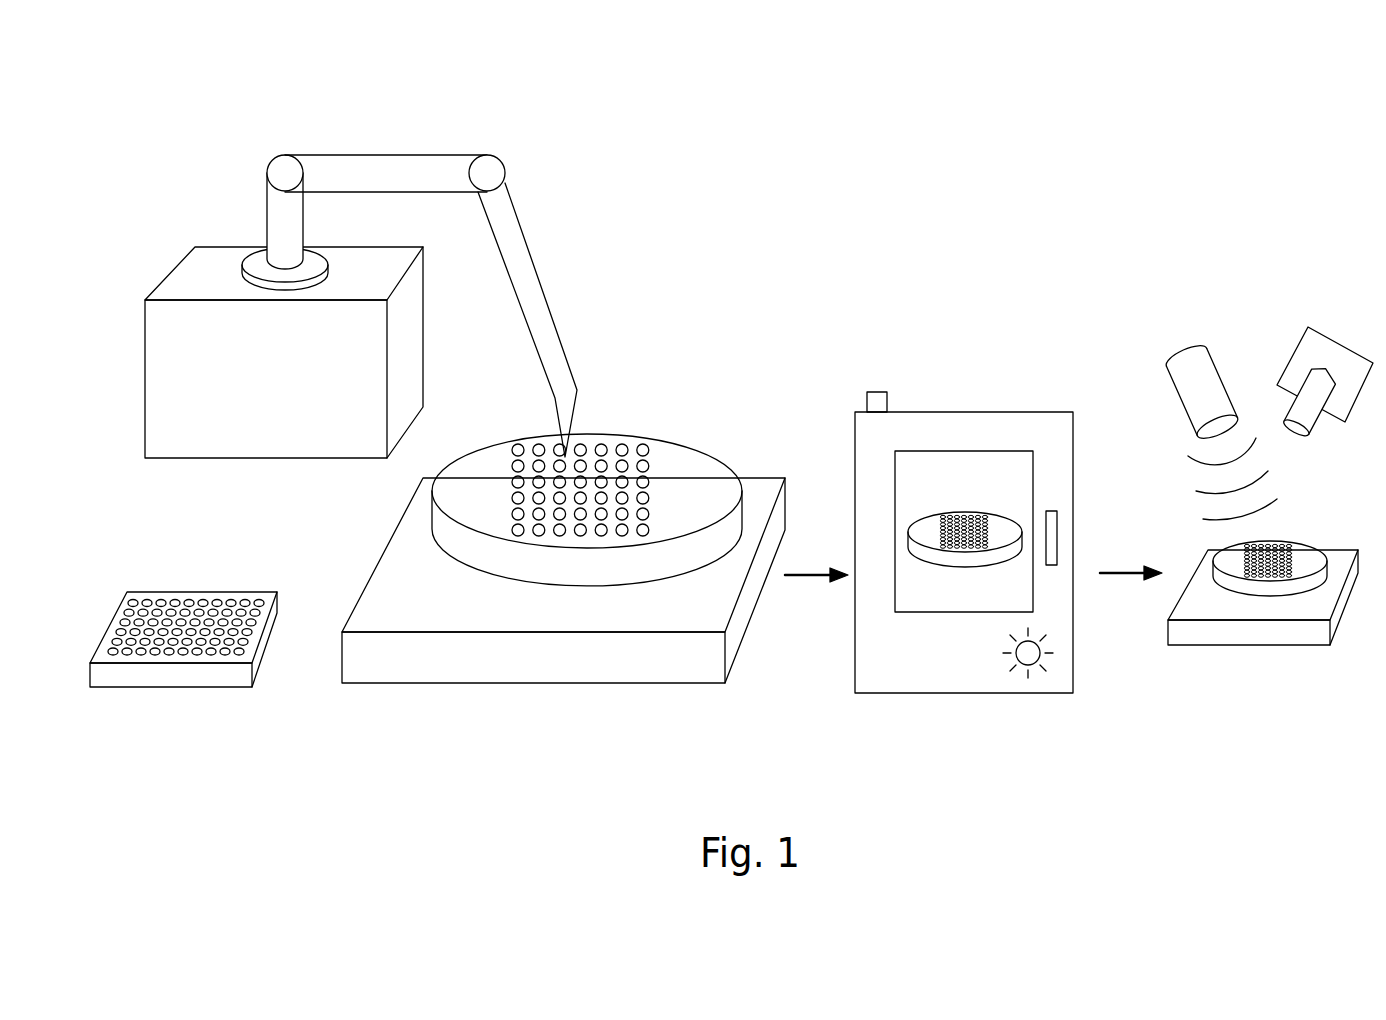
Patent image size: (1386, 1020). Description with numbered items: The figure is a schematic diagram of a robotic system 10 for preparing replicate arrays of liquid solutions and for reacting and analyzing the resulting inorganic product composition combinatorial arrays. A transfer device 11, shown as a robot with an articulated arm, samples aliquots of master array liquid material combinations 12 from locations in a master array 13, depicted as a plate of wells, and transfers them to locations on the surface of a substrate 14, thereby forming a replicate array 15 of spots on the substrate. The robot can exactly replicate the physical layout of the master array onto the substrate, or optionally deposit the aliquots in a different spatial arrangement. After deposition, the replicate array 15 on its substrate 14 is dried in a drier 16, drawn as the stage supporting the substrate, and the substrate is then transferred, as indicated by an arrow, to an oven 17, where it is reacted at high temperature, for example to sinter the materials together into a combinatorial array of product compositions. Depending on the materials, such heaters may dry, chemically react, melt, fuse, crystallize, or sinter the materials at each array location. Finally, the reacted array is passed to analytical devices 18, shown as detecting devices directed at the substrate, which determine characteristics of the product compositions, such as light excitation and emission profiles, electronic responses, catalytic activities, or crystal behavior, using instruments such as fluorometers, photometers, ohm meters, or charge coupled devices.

The system 10 is at (924, 118).
The transfer device 11 is at (203, 257).
The master array liquid material combinations 12 is at (178, 603).
The master array 13 is at (170, 675).
The substrate 14 is at (440, 532).
The replicate array 15 is at (622, 450).
The drier 16 is at (467, 667).
The oven 17 is at (948, 673).
The analytical devices 18 is at (1248, 335).